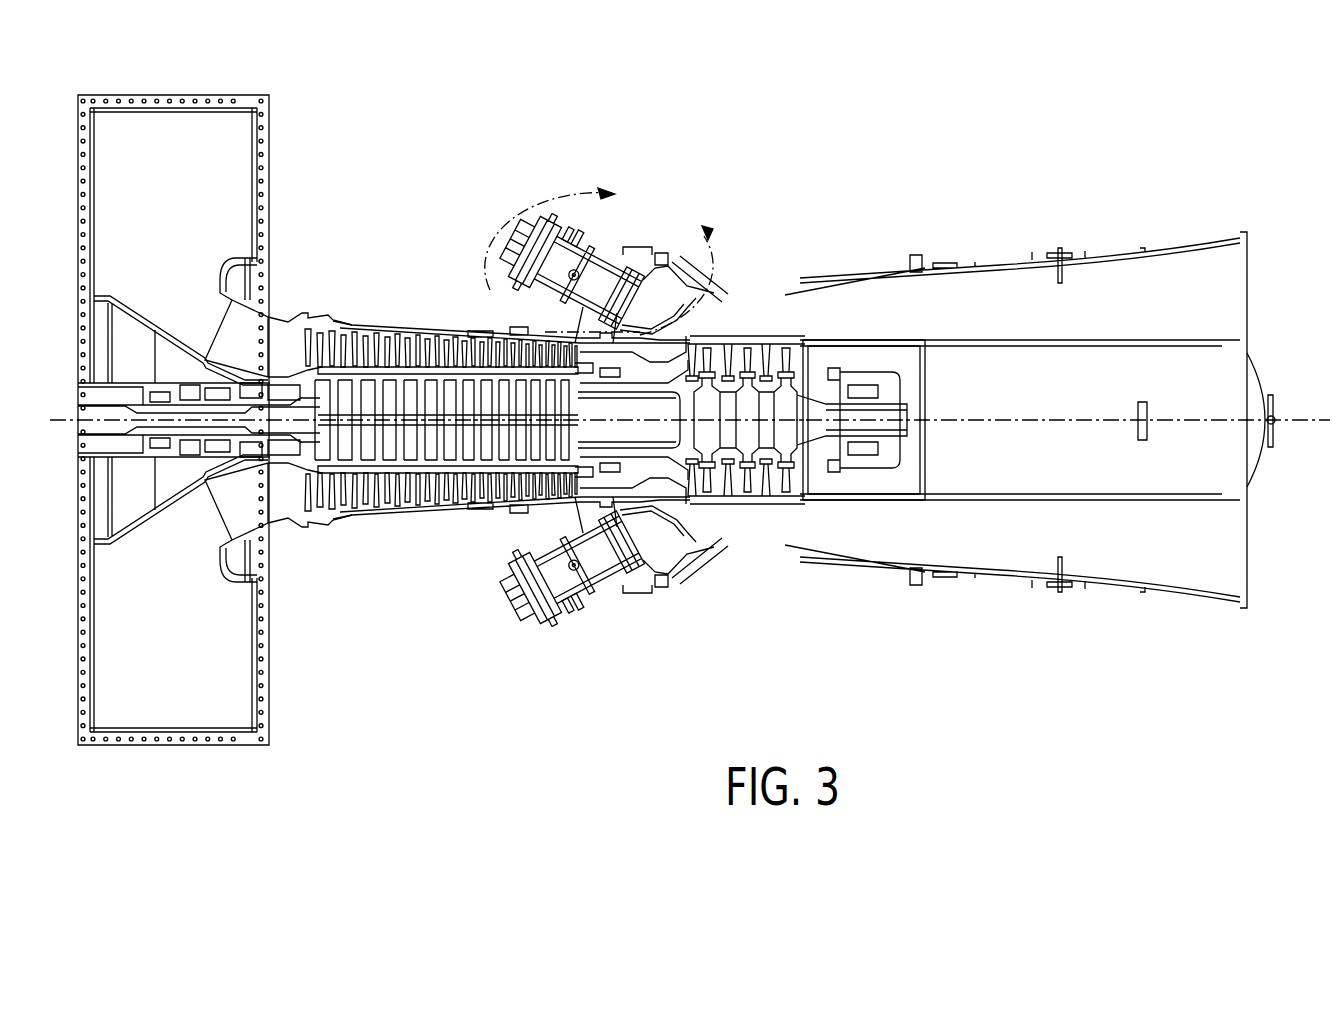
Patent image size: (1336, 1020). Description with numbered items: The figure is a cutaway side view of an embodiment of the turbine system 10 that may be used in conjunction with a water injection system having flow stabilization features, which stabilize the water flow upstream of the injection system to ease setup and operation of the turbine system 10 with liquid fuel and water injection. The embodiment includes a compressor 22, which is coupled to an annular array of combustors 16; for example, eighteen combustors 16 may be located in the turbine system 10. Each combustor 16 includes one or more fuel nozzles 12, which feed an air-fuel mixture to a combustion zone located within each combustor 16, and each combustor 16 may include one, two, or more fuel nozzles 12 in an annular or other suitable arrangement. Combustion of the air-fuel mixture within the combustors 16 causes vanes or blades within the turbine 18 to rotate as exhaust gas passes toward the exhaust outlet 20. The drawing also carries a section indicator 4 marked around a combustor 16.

The turbine system 10 is at (690, 420).
The fuel nozzle 12 is at (517, 256).
The combustor 16 is at (602, 241).
The turbine 18 is at (733, 337).
The exhaust outlet 20 is at (997, 292).
The compressor 22 is at (356, 345).
The section view indicator 4 is at (610, 249).